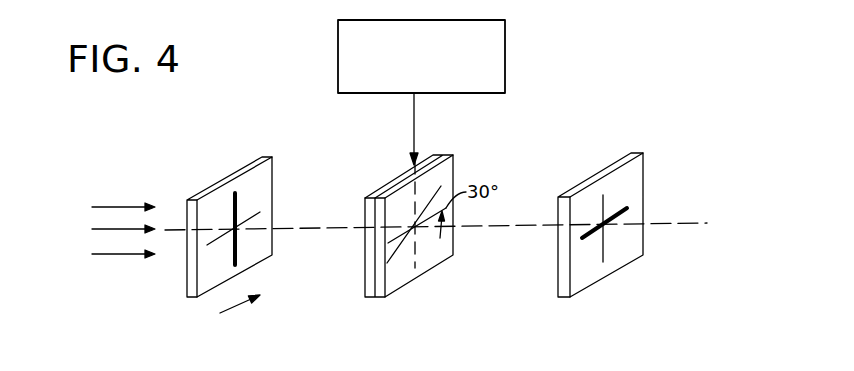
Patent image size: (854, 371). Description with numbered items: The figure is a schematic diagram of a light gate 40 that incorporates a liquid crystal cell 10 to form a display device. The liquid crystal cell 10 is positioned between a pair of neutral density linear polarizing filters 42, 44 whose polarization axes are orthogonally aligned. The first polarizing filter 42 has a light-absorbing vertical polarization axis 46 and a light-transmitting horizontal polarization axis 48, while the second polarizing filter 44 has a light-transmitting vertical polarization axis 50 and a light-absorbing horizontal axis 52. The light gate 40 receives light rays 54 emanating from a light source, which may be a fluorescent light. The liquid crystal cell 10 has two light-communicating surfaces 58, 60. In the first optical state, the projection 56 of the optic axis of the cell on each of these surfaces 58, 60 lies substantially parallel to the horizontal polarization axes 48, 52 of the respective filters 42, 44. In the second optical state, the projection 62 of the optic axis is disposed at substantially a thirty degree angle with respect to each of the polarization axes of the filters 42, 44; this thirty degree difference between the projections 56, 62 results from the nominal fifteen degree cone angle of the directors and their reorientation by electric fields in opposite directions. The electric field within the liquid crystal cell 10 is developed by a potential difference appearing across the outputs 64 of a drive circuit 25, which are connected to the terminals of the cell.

The liquid crystal cell 10 is at (393, 282).
The drive circuit 25 is at (505, 50).
The light gate 40 is at (226, 313).
The polarizing filter 42 is at (187, 285).
The polarizing filter 44 is at (558, 257).
The vertical polarization axis 46 is at (233, 208).
The horizontal polarization axis 48 is at (246, 214).
The vertical polarization axis 50 is at (602, 203).
The horizontal axis 52 is at (617, 212).
The light rays 54 is at (92, 254).
The projection of the optic axis 56 is at (402, 229).
The light-communicating surface 58 is at (365, 265).
The light-communicating surface 60 is at (453, 160).
The projection of the optic axis 62 is at (448, 181).
The outputs 64 is at (414, 115).